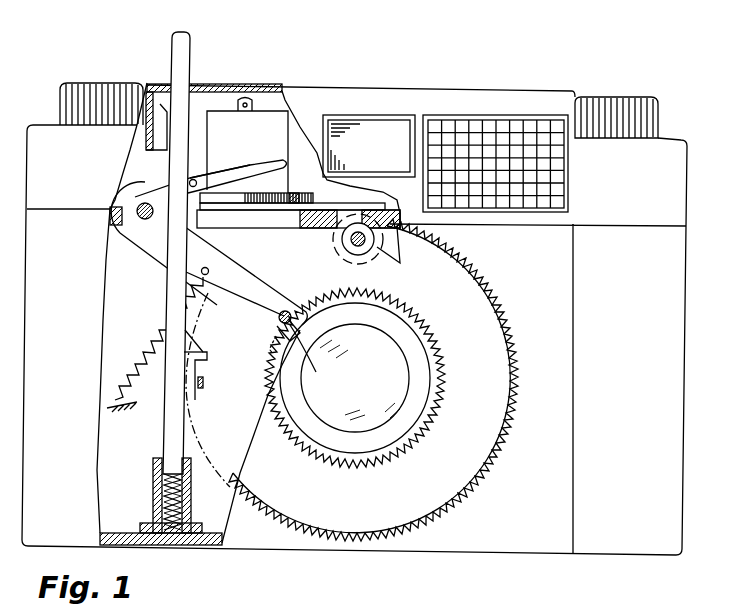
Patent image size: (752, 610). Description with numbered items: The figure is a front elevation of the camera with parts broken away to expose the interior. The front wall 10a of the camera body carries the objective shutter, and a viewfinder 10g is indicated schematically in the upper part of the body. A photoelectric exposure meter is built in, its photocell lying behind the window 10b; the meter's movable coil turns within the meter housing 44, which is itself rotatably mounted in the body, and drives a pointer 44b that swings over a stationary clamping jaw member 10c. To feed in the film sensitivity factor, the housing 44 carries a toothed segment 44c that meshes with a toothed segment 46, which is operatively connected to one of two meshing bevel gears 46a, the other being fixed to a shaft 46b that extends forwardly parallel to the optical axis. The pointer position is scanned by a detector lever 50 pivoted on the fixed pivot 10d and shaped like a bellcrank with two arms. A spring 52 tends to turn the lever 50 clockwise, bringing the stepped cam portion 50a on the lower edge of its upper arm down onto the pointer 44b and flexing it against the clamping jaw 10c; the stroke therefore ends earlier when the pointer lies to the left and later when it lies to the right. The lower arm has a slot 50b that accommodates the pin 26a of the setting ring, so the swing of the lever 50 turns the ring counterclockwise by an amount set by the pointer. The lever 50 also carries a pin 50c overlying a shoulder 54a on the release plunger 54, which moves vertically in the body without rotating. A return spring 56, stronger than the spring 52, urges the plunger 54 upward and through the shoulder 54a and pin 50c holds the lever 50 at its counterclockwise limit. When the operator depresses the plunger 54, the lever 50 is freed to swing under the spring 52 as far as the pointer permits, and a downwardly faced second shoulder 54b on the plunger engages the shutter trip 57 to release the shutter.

The front wall 10a is at (520, 548).
The window 10b is at (483, 128).
The clamping jaw member 10c is at (270, 210).
The fixed pivot 10d is at (140, 210).
The viewfinder 10g is at (370, 130).
The pin 26a is at (270, 320).
The meter housing 44 is at (263, 112).
The pointer 44b is at (243, 198).
The segment 44c is at (293, 196).
The toothed segment 46 is at (340, 203).
The bevel gears 46a is at (399, 260).
The shaft 46b is at (352, 243).
The detector lever 50 is at (147, 233).
The stepped cam portion 50a is at (253, 180).
The slot 50b is at (308, 358).
The pin 50c is at (189, 182).
The spring 52 is at (133, 373).
The release plunger 54 is at (186, 50).
The shoulder 54a is at (191, 220).
The second shoulder 54b is at (208, 362).
The return spring 56 is at (160, 510).
The shutter trip 57 is at (204, 389).